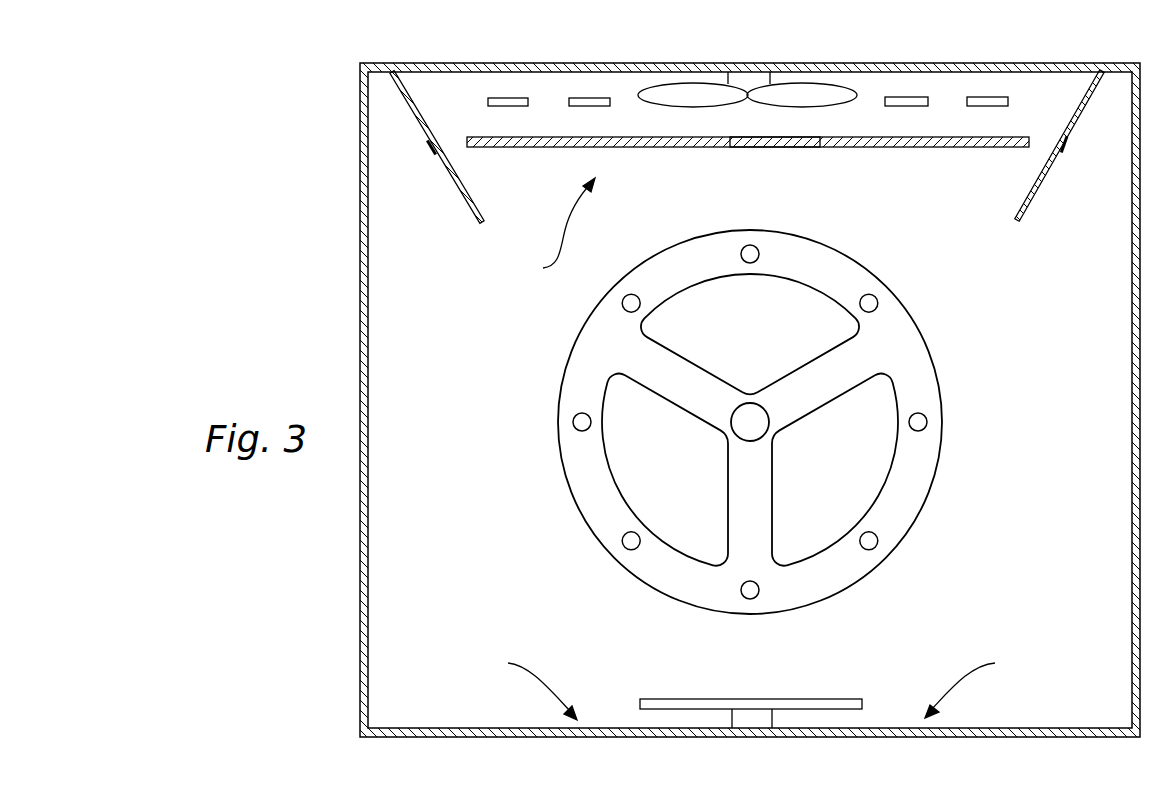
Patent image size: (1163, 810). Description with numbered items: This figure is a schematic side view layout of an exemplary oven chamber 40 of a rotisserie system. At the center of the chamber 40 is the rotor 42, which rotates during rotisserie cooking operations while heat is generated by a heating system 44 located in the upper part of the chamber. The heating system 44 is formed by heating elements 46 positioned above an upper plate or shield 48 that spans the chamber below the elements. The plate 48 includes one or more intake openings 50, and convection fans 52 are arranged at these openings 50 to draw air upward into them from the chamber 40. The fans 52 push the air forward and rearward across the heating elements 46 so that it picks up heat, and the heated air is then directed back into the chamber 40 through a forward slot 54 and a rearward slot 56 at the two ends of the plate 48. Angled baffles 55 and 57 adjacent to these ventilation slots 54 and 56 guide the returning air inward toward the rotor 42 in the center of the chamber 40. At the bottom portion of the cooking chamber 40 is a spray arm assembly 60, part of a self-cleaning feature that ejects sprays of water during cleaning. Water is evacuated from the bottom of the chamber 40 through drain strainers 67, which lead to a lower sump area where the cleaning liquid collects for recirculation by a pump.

The oven chamber 40 is at (1025, 344).
The rotor 42 is at (918, 463).
The heating system 44 is at (555, 228).
The heating elements 46 is at (507, 98).
The upper plate or shield 48 is at (625, 147).
The intake openings 50 is at (730, 147).
The convection fans 52 is at (800, 93).
The forward slot 54 is at (1040, 148).
The baffle 55 is at (463, 200).
The rearward slot 56 is at (463, 143).
The baffle 57 is at (1033, 200).
The spray arm assembly 60 is at (813, 690).
The drain strainers 67 is at (751, 686).